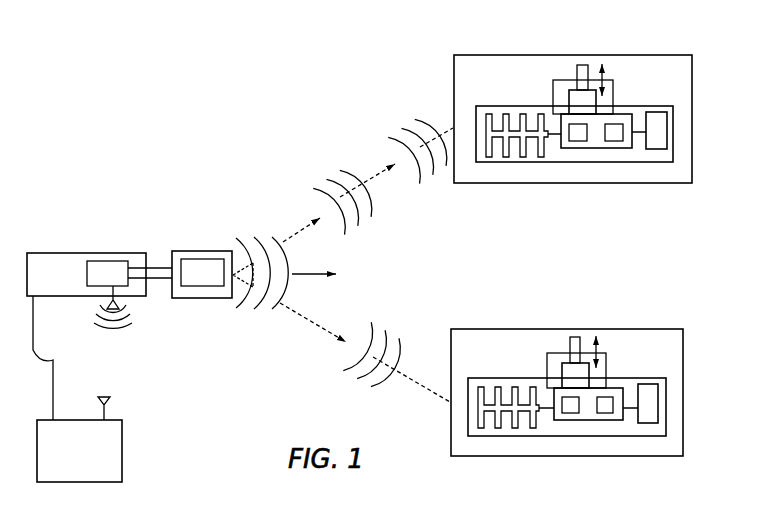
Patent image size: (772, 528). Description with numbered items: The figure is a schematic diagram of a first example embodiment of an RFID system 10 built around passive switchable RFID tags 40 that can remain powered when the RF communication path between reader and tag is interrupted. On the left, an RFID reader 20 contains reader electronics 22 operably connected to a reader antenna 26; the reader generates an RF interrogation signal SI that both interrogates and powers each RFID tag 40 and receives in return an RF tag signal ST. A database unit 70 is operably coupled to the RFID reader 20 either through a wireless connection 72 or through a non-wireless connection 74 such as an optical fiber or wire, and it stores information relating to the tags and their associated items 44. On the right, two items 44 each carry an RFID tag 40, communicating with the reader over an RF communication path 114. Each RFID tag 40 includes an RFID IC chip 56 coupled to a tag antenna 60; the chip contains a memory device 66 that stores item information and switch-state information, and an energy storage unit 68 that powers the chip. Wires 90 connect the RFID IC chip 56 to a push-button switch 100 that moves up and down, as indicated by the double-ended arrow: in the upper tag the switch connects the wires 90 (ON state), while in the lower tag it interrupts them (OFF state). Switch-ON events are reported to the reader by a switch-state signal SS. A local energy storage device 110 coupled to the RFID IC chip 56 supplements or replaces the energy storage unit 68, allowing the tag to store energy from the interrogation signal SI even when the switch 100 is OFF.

The RFID system 10 is at (212, 148).
The RFID reader 20 is at (81, 253).
The reader electronics 22 is at (116, 282).
The reader antenna 26 is at (200, 249).
The RFID tag 40 is at (587, 165).
The item 44 is at (693, 80).
The RFID IC chip 56 is at (568, 142).
The tag antenna 60 is at (505, 153).
The memory device 66 is at (613, 138).
The energy storage unit 68 is at (580, 138).
The database unit 70 is at (88, 461).
The wireless connection 72 is at (124, 346).
The non-wireless connection 74 is at (33, 353).
The wires 90 is at (568, 103).
The switch 100 is at (581, 45).
The local energy storage device 110 is at (658, 128).
The RF communication path 114 is at (287, 237).
The interrogation signal SI is at (275, 324).
The tag signal ST is at (372, 233).
The switch-state signal SS is at (445, 185).